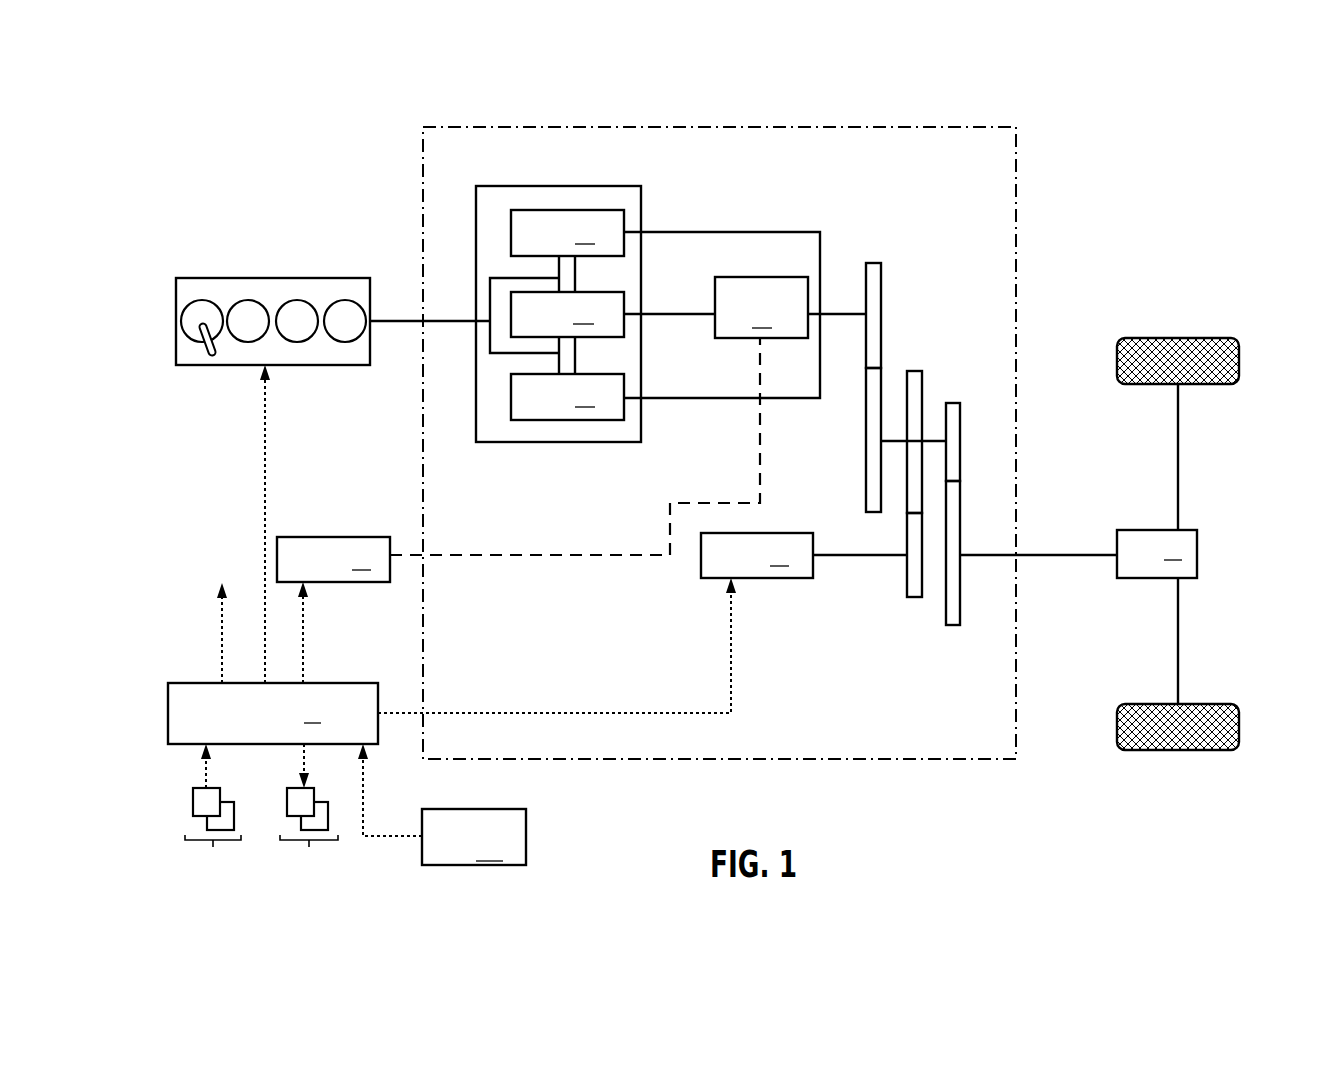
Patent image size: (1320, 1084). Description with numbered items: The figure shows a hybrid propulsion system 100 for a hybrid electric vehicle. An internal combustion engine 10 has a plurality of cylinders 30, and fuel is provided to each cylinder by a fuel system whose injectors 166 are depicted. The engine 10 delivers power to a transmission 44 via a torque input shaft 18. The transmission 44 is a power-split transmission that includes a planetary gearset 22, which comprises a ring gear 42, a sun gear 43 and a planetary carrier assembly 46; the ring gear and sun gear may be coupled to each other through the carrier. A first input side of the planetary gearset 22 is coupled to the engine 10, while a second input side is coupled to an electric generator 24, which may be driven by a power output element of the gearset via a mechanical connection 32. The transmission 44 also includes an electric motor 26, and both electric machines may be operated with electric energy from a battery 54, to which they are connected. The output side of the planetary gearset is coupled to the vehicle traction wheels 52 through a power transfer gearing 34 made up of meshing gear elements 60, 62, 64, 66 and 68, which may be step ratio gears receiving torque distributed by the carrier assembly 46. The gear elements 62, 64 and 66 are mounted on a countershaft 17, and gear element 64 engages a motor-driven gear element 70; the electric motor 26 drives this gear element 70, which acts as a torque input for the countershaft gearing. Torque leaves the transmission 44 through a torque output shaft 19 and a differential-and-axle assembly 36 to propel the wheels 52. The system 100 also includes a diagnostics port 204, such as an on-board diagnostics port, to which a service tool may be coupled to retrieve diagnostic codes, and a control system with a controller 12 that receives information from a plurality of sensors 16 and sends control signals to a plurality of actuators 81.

The internal combustion engine 10 is at (204, 278).
The cylinders 30 is at (197, 303).
The injectors 166 is at (205, 352).
The torque input shaft 18 is at (373, 320).
The transmission 44 is at (1016, 170).
The planetary gearset 22 is at (514, 187).
The ring gear 42 is at (665, 315).
The sun gear 43 is at (567, 314).
The planetary carrier assembly 46 is at (567, 284).
The mechanical connection 32 is at (655, 313).
The electric generator 24 is at (790, 307).
The power transfer gearing 34 is at (949, 249).
The meshing gear element 60 is at (873, 263).
The gear element 62 is at (866, 456).
The gear element 64 is at (914, 371).
The motor-driven gear element 70 is at (912, 599).
The gear element 66 is at (960, 420).
The meshing gear element 68 is at (953, 625).
The countershaft 17 is at (888, 441).
The electric motor 26 is at (804, 555).
The torque output shaft 19 is at (1038, 555).
The differential-and-axle assembly 36 is at (1157, 544).
The vehicle traction wheels 52 is at (1163, 338).
The battery 54 is at (518, 460).
The controller 12 is at (452, 554).
The sensors 16 is at (209, 815).
The actuators 81 is at (306, 815).
The diagnostics port 204 is at (442, 804).
The hybrid propulsion system 100 is at (1205, 202).